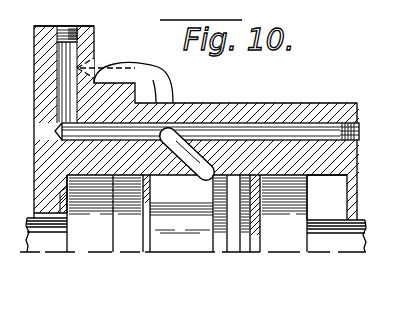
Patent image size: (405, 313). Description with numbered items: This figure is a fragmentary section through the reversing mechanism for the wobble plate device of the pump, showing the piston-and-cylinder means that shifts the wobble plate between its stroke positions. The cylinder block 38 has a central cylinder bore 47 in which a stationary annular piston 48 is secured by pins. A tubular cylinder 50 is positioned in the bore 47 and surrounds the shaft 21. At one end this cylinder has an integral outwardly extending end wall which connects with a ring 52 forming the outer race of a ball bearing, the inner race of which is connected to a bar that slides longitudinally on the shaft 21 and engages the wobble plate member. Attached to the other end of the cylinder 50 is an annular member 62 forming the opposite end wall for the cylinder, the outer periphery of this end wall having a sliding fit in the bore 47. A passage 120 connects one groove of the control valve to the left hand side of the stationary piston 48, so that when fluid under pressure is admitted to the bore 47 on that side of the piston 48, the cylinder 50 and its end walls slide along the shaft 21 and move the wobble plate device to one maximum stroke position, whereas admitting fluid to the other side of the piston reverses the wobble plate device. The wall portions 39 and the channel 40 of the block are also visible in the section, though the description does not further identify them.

The shaft 21 is at (49, 242).
The cylinder block 38 is at (213, 103).
The wall 39 is at (44, 26).
The channel 40 is at (126, 21).
The central cylinder bore 47 is at (331, 175).
The stationary annular piston 48 is at (221, 240).
The tubular cylinder 50 is at (193, 240).
The ring 52 is at (288, 238).
The annular member 62 is at (134, 240).
The passage 120 is at (143, 70).